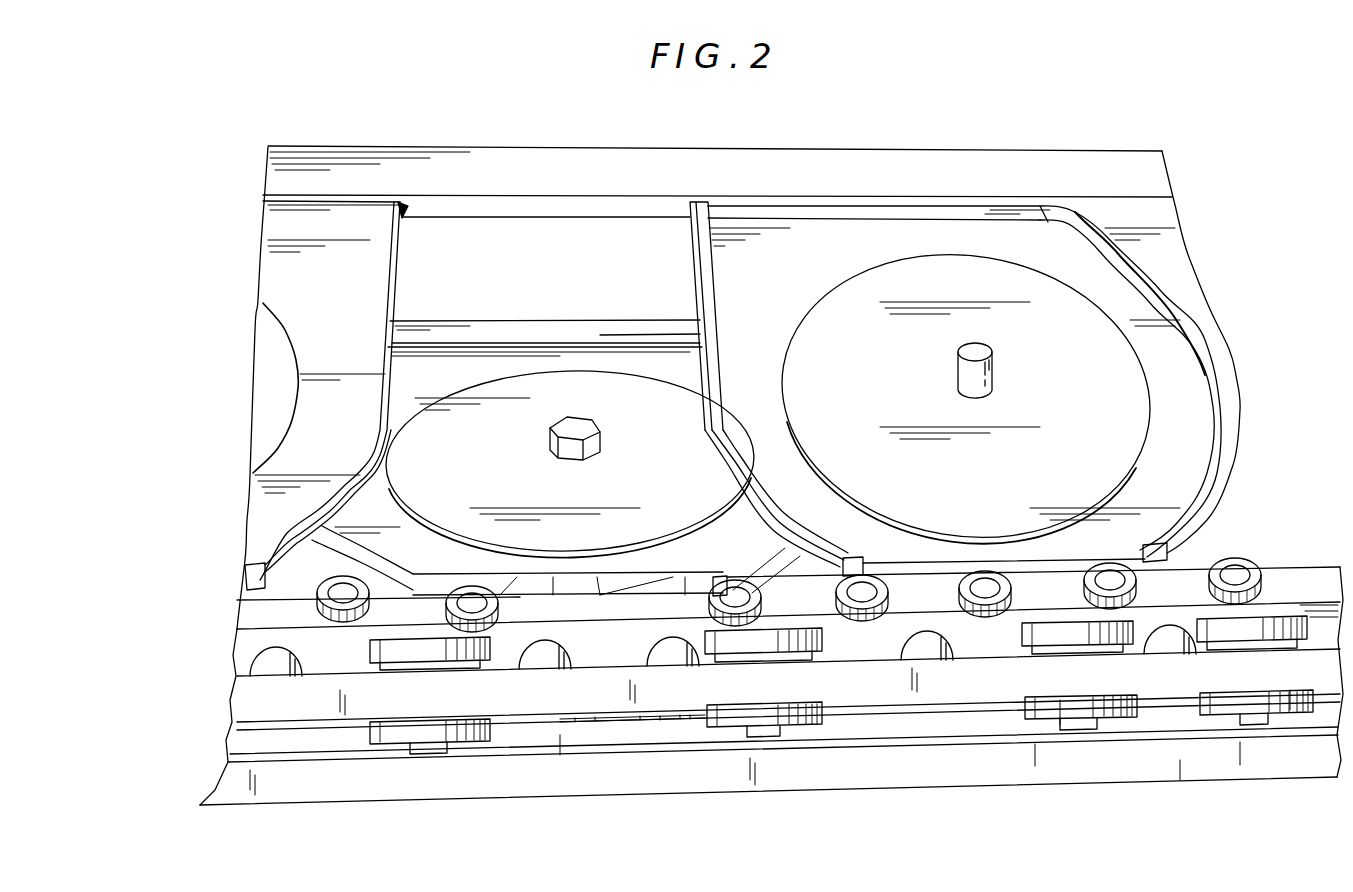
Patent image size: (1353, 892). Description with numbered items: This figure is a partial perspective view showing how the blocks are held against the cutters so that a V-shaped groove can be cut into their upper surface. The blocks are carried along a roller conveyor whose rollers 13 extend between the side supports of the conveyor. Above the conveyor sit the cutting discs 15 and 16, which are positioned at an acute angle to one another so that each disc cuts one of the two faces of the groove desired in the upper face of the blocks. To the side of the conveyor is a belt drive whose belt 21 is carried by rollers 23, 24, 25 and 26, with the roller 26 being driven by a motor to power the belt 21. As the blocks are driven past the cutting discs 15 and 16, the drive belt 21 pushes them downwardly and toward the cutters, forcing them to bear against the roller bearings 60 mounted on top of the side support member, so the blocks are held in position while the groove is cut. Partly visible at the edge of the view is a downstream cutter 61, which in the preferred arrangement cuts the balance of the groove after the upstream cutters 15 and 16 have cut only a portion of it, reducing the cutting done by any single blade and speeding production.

The rollers 13 is at (303, 660).
The cutting disc 15 is at (892, 365).
The cutting disc 16 is at (515, 463).
The belt 21 is at (600, 695).
The roller 23 is at (1227, 702).
The roller 24 is at (1082, 707).
The roller 25 is at (743, 717).
The roller 26 is at (403, 735).
The roller bearings 60 is at (350, 590).
The downstream cutter 61 is at (268, 383).